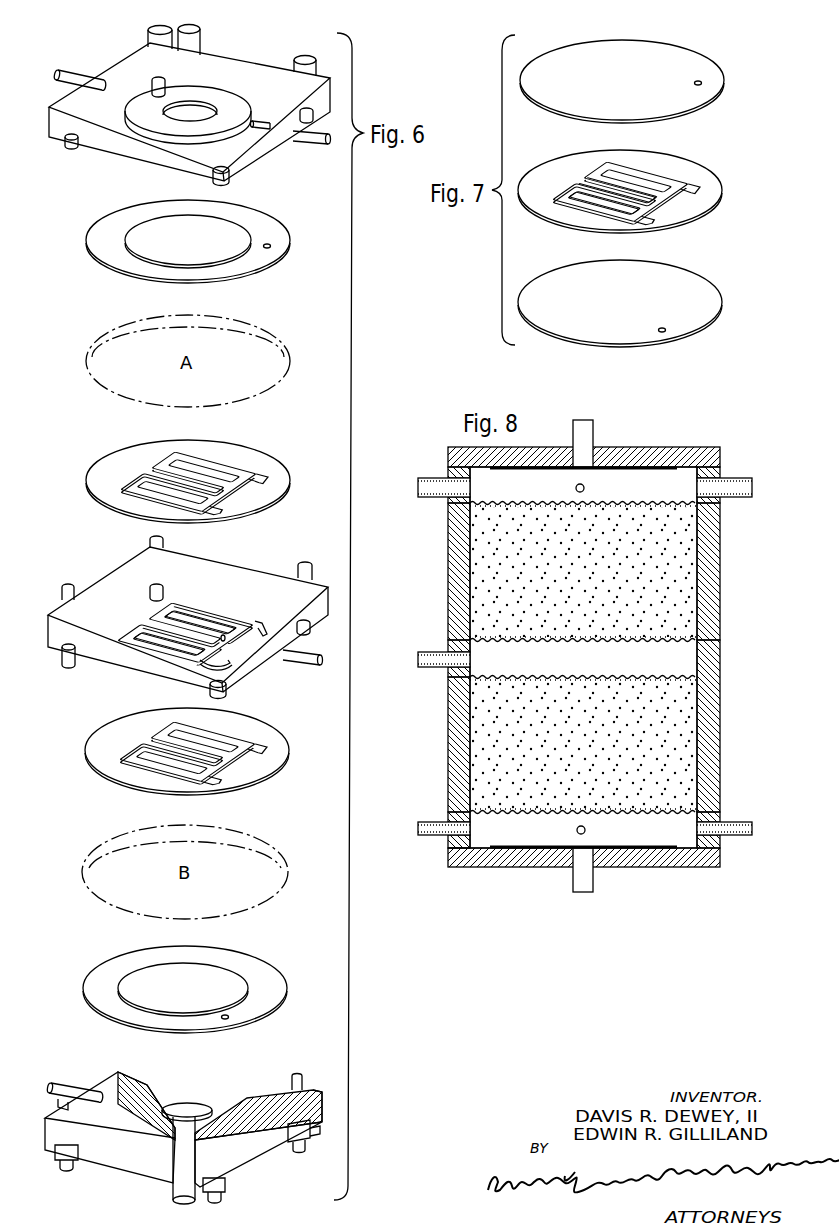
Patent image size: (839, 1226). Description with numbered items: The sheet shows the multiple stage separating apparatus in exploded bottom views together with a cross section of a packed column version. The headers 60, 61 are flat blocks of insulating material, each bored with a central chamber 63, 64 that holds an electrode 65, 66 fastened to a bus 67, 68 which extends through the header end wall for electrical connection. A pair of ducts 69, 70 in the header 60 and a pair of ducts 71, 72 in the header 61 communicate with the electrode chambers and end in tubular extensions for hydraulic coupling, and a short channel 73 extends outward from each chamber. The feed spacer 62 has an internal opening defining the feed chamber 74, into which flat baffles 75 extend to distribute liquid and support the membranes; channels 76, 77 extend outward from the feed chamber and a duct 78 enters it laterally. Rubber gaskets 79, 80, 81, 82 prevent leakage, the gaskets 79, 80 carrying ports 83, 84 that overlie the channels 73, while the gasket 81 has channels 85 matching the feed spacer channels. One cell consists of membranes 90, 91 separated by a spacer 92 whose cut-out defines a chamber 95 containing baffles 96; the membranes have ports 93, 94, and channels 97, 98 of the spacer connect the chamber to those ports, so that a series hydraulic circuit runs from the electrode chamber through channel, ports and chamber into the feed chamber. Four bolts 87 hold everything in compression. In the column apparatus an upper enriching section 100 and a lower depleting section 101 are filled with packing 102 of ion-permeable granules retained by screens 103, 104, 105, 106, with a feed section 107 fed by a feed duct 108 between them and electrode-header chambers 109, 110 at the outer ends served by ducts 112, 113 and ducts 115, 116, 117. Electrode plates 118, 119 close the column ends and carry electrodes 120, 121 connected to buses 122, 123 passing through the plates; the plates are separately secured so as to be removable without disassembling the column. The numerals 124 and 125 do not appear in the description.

In FIG. 6, the header 60 is at (49, 118).
In FIG. 6, the header 61 is at (45, 1142).
In FIG. 6, the feed spacer 62 is at (50, 625).
In FIG. 6, the central chamber 63 is at (169, 135).
In FIG. 6, the central chamber 64 is at (230, 1102).
In FIG. 6, the electrode 65 is at (172, 124).
In FIG. 6, the electrode 66 is at (175, 1107).
In FIG. 6, the bus 67 is at (197, 43).
In FIG. 6, the bus 68 is at (173, 1190).
In FIG. 6, the duct 69 is at (75, 76).
In FIG. 6, the duct 70 is at (313, 138).
In FIG. 6, the duct 71 is at (70, 1086).
In FIG. 6, the duct 72 is at (298, 1166).
In FIG. 6, the channel 73 is at (262, 128).
In FIG. 6, the feed chamber 74 is at (187, 658).
In FIG. 6, the baffles 75 is at (200, 620).
In FIG. 6, the channel 76 is at (226, 664).
In FIG. 6, the channel 77 is at (262, 622).
In FIG. 6, the duct 78 is at (311, 658).
In FIG. 6, the gasket 79 is at (259, 221).
In FIG. 6, the gasket 80 is at (256, 969).
In FIG. 6, the gasket 81 is at (255, 458).
In FIG. 6, the gasket 82 is at (256, 734).
In FIG. 6, the port 83 is at (268, 249).
In FIG. 6, the port 84 is at (232, 1017).
In FIG. 6, the channel 85 is at (224, 513).
In FIG. 6, the bolts 87 is at (63, 1172).
In FIG. 7, the membrane 90 is at (687, 58).
In FIG. 7, the membrane 91 is at (690, 280).
In FIG. 7, the spacer 92 is at (677, 218).
In FIG. 7, the port 93 is at (701, 87).
In FIG. 7, the port 94 is at (660, 331).
In FIG. 7, the chamber 95 is at (605, 213).
In FIG. 7, the baffles 96 is at (583, 193).
In FIG. 7, the channel 97 is at (709, 183).
In FIG. 7, the channel 98 is at (663, 216).
In FIG. 8, the enriching section 100 is at (720, 547).
In FIG. 8, the depleting section 101 is at (719, 740).
In FIG. 8, the packing 102 is at (673, 575).
In FIG. 8, the screen 103 is at (684, 485).
In FIG. 8, the screen 104 is at (690, 641).
In FIG. 8, the screen 105 is at (617, 676).
In FIG. 8, the screen 106 is at (686, 813).
In FIG. 8, the feed section 107 is at (519, 668).
In FIG. 8, the feed duct 108 is at (437, 668).
In FIG. 8, the upper header section 109 is at (519, 495).
In FIG. 8, the lower header section 110 is at (519, 838).
In FIG. 8, the duct 112 is at (727, 481).
In FIG. 8, the duct 113 is at (576, 488).
In FIG. 8, the duct 115 is at (437, 819).
In FIG. 8, the duct 116 is at (730, 840).
In FIG. 8, the duct 117 is at (577, 831).
In FIG. 8, the electrode plate 118 is at (652, 447).
In FIG. 8, the electrode plate 119 is at (665, 868).
In FIG. 8, the electrode 120 is at (602, 469).
In FIG. 8, the electrode 121 is at (622, 846).
In FIG. 8, the bus 122 is at (590, 434).
In FIG. 8, the bus 123 is at (591, 875).
In FIG. 8, the upper port 124 is at (448, 470).
In FIG. 8, the bottom port 125 is at (450, 847).